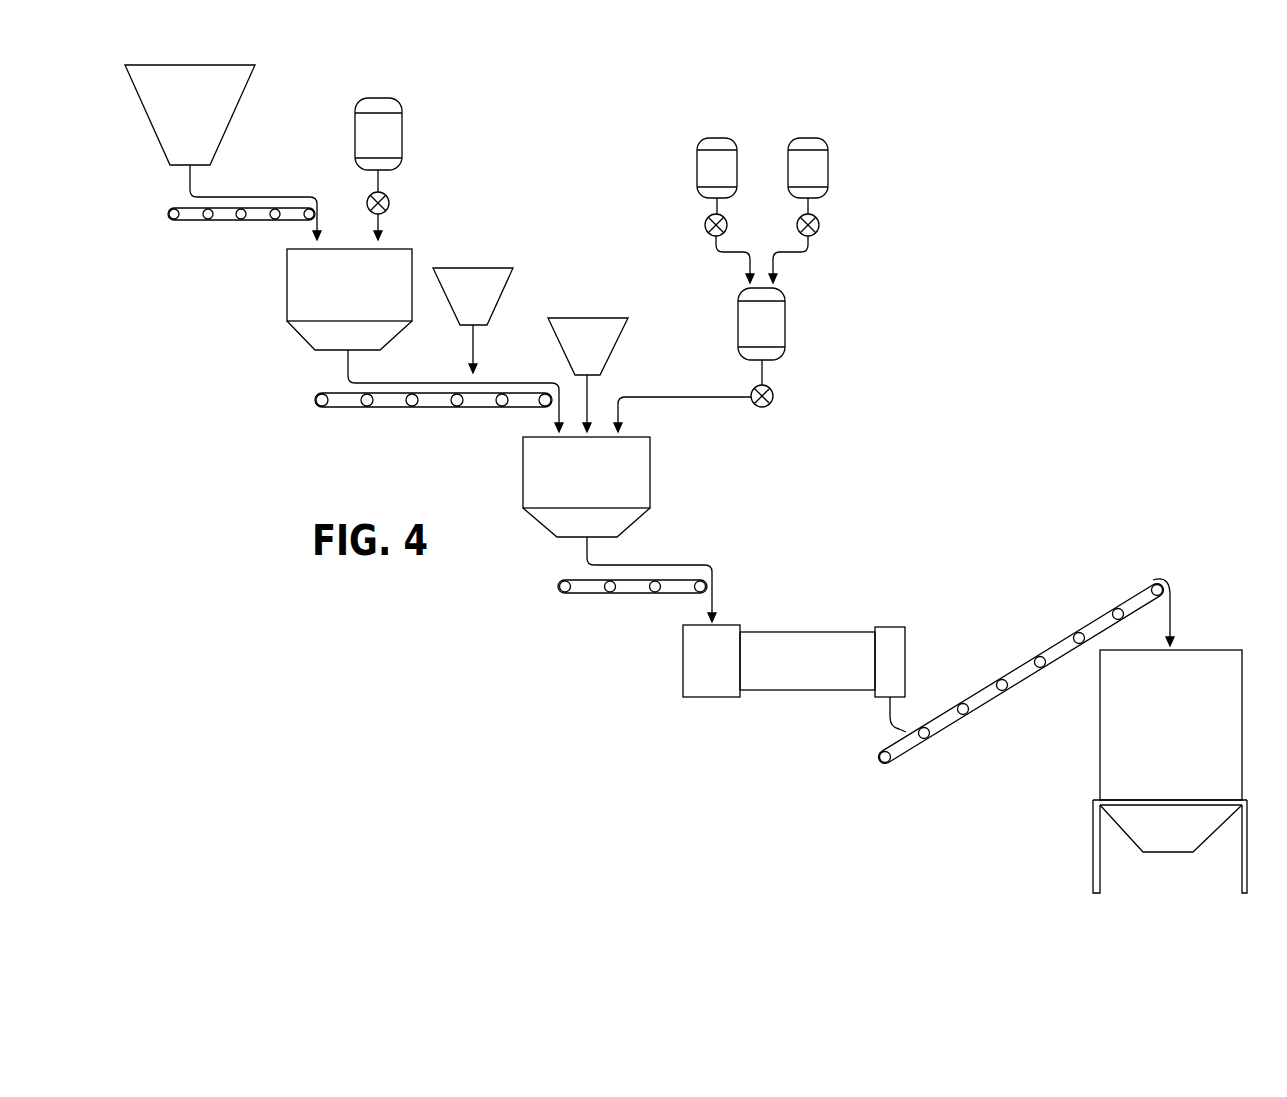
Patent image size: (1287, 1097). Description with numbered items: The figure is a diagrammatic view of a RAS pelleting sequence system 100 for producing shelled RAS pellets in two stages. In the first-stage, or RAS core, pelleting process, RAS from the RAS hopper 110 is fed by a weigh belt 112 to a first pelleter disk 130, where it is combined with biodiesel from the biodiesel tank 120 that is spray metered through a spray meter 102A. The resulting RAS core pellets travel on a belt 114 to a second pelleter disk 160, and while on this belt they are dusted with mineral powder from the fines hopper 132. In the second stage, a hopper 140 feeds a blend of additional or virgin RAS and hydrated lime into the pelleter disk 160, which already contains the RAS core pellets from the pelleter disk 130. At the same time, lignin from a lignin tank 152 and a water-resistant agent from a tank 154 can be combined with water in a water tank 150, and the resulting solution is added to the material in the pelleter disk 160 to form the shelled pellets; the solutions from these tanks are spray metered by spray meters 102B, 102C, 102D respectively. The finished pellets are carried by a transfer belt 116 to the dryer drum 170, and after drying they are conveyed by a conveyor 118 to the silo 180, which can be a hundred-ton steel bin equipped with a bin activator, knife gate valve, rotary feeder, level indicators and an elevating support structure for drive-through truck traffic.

The RAS pelleting sequence system 100 is at (972, 133).
The RAS hopper 110 is at (245, 95).
The weigh belt 112 is at (224, 222).
The belt 114 is at (434, 410).
The transfer belt 116 is at (632, 596).
The conveyor 118 is at (992, 700).
The biodiesel tank 120 is at (355, 138).
The spray meter 102A is at (389, 203).
The spray meter 102B is at (705, 225).
The spray meter 102C is at (819, 225).
The spray meter 102D is at (773, 397).
The pelleter disk 130 is at (302, 338).
The fines hopper 132 is at (498, 306).
The hopper 140 is at (610, 353).
The water tank 150 is at (738, 326).
The lignin tank 152 is at (717, 138).
The water-resistant agent tank 154 is at (807, 138).
The pelleter disk 160 is at (650, 472).
The dryer drum 170 is at (808, 632).
The silo 180 is at (1217, 650).